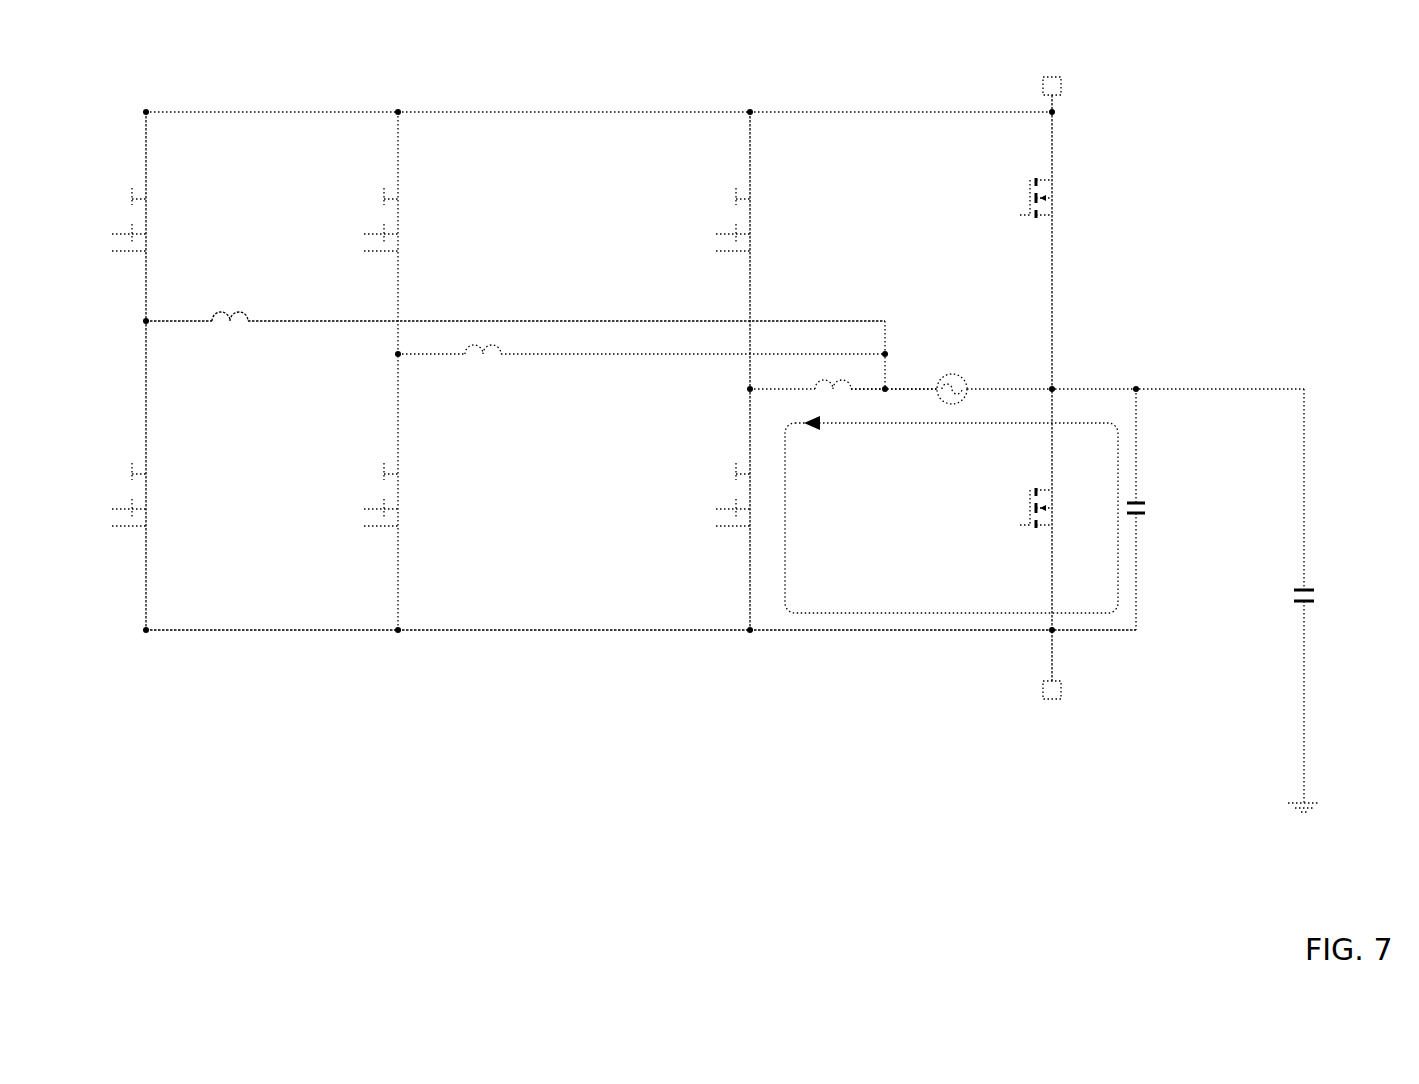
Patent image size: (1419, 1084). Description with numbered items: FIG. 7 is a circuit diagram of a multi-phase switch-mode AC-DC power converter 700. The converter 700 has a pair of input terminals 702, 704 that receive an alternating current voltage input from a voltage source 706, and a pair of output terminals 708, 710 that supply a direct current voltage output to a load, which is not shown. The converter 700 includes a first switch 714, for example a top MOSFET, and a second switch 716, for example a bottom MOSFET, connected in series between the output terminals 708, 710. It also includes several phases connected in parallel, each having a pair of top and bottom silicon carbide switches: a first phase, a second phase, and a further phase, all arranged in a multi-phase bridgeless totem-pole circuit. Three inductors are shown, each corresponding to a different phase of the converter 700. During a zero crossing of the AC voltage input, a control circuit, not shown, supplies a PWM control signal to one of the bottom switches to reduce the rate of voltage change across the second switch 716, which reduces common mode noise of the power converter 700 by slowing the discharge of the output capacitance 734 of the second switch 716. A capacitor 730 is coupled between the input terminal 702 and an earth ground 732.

The multi-phase switch-mode AC-DC power converter 700 is at (172, 83).
The input terminal 702 is at (983, 388).
The input terminal 704 is at (908, 386).
The voltage source 706 is at (958, 366).
The output terminal 708 is at (1055, 67).
The output terminal 710 is at (1053, 715).
The first switch 714 is at (1008, 192).
The second switch 716 is at (1011, 506).
The capacitor 730 is at (1295, 613).
The earth ground 732 is at (1336, 811).
The output capacitance 734 is at (1168, 509).